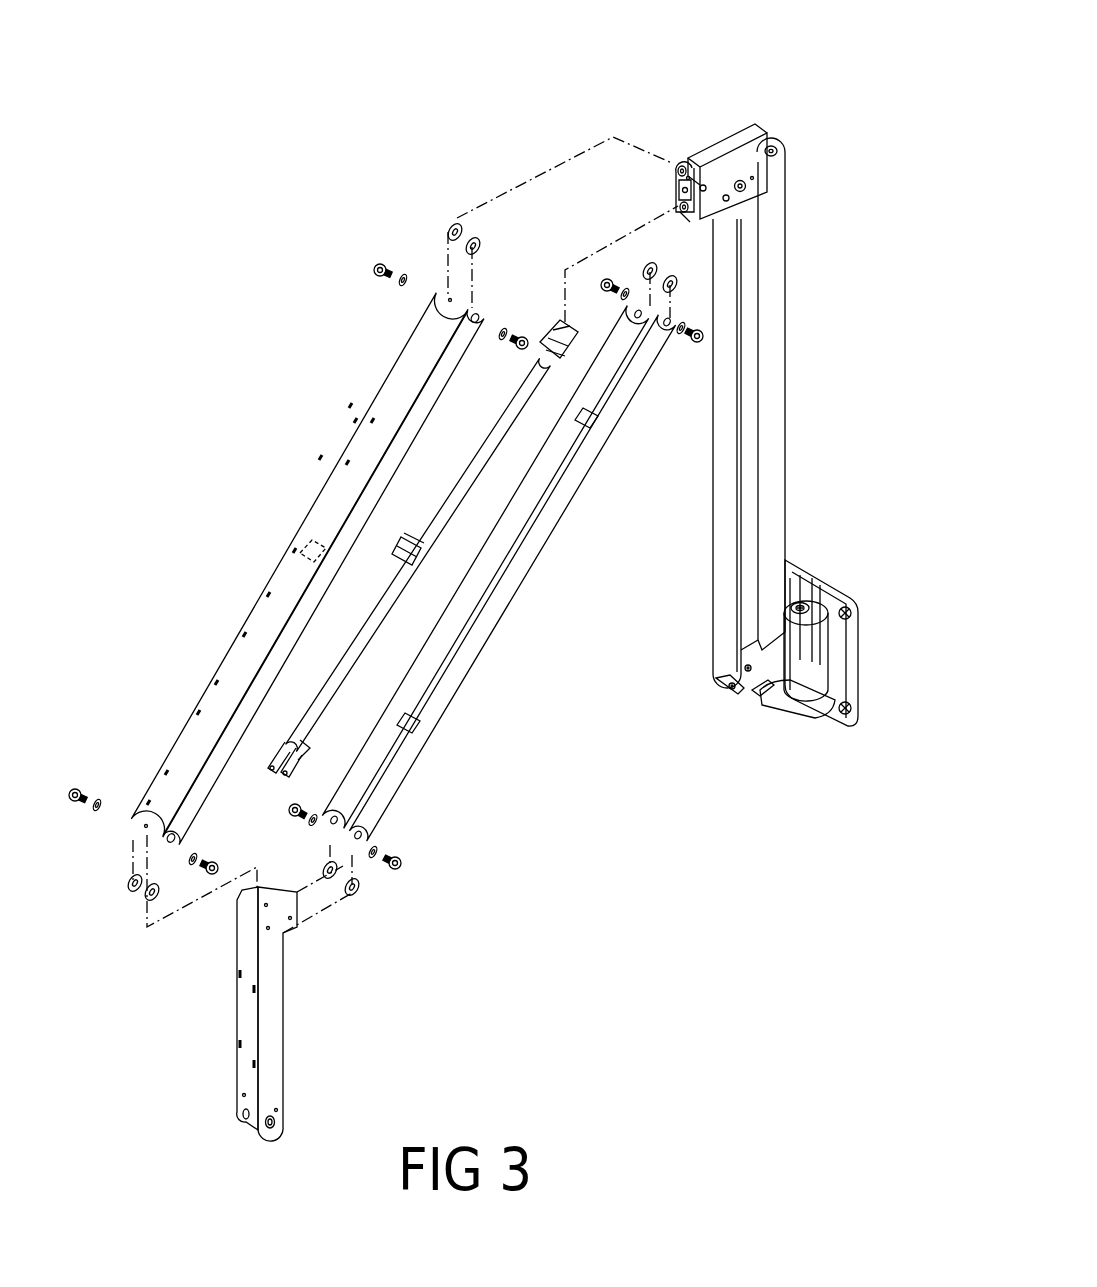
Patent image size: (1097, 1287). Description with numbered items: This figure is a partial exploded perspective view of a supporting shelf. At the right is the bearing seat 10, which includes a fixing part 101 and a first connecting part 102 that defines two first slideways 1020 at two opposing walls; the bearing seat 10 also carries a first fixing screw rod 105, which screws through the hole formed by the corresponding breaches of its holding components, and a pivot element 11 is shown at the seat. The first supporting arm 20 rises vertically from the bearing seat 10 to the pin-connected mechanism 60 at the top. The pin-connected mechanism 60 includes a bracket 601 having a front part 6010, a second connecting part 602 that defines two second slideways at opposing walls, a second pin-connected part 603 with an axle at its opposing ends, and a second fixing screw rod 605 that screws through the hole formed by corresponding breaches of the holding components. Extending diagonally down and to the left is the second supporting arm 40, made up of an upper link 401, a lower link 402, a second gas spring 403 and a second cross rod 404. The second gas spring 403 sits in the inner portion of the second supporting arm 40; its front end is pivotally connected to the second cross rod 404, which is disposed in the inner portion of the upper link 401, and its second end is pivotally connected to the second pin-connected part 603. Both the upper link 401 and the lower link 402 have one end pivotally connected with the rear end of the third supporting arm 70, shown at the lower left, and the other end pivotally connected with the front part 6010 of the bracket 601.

The bearing seat 10 is at (858, 580).
The pivot pin 11 is at (798, 606).
The fixing part 101 is at (847, 660).
The first connecting part 102 is at (783, 683).
The first slideways 1020 is at (762, 693).
The first fixing screw rod 105 is at (735, 692).
The first supporting arm 20 is at (780, 366).
The second supporting arm 40 is at (215, 452).
The upper link 401 is at (370, 425).
The lower link 402 is at (520, 560).
The second gas spring 403 is at (406, 568).
The second cross rod 404 is at (300, 553).
The pin-connected mechanism 60 is at (706, 122).
The bracket 601 is at (737, 128).
The front part 6010 is at (683, 190).
The second connecting part 602 is at (688, 200).
The second pin-connected part 603 is at (680, 218).
The second fixing screw rod 605 is at (686, 163).
The third supporting arm 70 is at (245, 1015).